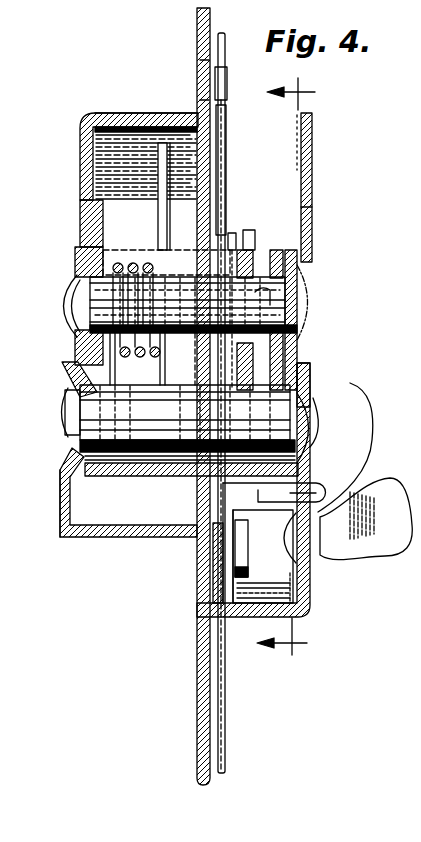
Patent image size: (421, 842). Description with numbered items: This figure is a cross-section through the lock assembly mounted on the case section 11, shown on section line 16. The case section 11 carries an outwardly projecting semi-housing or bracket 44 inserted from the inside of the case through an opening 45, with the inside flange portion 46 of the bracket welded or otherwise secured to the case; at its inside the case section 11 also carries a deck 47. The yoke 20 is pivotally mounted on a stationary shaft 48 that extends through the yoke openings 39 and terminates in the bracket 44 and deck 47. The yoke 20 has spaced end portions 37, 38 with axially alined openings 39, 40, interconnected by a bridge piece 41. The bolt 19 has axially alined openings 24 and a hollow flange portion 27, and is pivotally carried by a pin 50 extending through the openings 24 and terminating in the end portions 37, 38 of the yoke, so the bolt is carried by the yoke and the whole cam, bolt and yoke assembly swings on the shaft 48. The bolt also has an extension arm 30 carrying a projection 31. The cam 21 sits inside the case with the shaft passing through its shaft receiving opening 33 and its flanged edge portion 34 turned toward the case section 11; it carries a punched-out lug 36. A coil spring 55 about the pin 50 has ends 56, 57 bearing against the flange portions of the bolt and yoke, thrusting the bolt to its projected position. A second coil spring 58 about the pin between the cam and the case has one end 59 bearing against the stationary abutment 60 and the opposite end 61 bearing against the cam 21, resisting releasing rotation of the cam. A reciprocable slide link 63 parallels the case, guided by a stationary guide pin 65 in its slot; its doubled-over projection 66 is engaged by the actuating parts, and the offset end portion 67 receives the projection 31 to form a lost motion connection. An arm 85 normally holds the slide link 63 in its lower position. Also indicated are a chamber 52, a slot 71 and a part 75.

The case section 11 is at (205, 668).
The section line 16 is at (299, 366).
The bolt 19 is at (78, 160).
The yoke 20 is at (78, 482).
The cam 21 is at (252, 250).
The openings 24 is at (80, 270).
The hollow flange portion 27 is at (148, 114).
The extension arm 30 is at (297, 358).
The projection 31 is at (297, 345).
The shaft receiving opening 33 is at (310, 385).
The flanged edge portion 34 is at (234, 233).
The lug 36 is at (270, 298).
The end portion of yoke 37 is at (75, 252).
The end portion of yoke 38 is at (313, 210).
The openings 39 is at (70, 385).
The openings 40 is at (92, 292).
The bridge piece 41 is at (150, 477).
The bracket 44 is at (68, 538).
The opening 45 is at (237, 540).
The inside flange portion 46 is at (218, 585).
The deck 47 is at (312, 173).
The stationary shaft 48 is at (78, 415).
The pin 50 is at (85, 313).
The chamber 52 is at (212, 265).
The coil spring 55 is at (128, 357).
The spring end 56 is at (160, 188).
The spring end 57 is at (118, 382).
The second coil spring 58 is at (195, 355).
The spring end 59 is at (226, 122).
The stationary abutment 60 is at (199, 80).
The spring end 61 is at (298, 250).
The slide link 63 is at (232, 688).
The stationary guide pin 65 is at (237, 555).
The projection 66 is at (325, 497).
The offset end portion 67 is at (222, 494).
The slot 71 is at (166, 207).
The lever 75 is at (385, 550).
The arm 85 is at (366, 423).